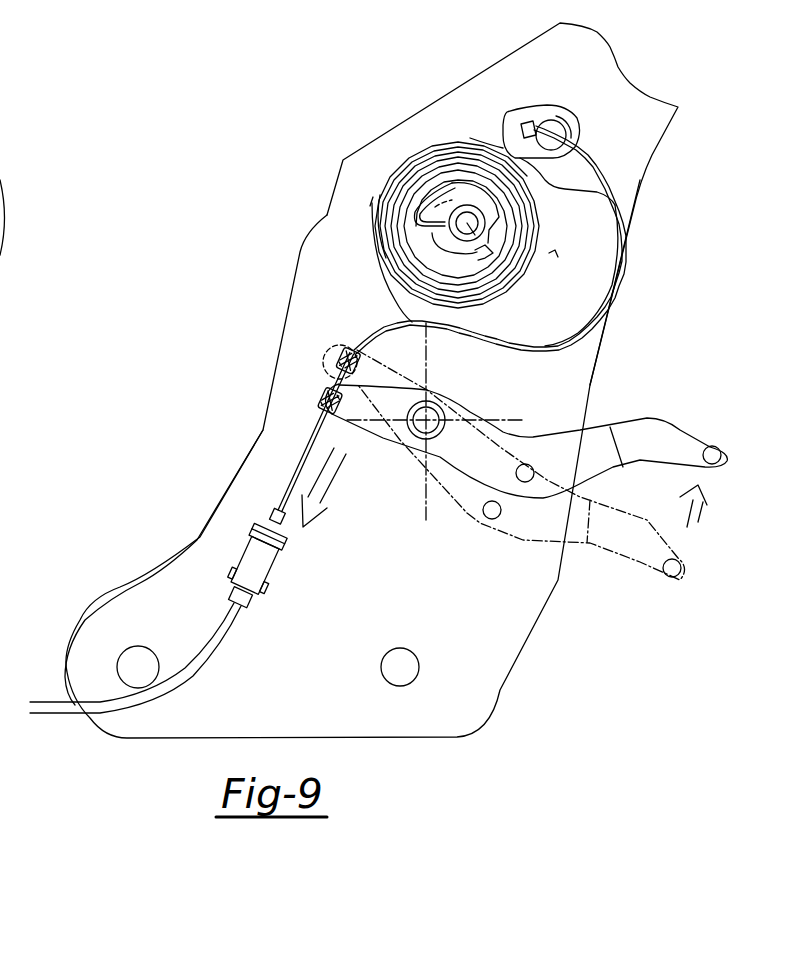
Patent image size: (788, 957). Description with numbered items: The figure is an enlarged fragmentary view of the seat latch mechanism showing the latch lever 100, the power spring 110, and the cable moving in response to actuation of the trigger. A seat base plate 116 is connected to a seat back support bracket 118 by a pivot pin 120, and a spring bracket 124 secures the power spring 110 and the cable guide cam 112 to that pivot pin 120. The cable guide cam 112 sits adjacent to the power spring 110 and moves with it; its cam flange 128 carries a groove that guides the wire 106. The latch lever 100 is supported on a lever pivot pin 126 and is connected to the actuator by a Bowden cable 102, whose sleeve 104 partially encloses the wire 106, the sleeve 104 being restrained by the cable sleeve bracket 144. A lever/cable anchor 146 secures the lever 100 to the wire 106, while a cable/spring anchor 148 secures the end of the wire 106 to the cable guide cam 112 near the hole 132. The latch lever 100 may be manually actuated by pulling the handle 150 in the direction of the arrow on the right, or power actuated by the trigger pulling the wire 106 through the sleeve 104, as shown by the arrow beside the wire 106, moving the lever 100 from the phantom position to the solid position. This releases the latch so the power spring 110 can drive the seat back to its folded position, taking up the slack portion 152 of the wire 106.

The latch lever 100 is at (593, 441).
The Bowden cable 102 is at (195, 650).
The sleeve 104 is at (188, 686).
The wire 106 is at (300, 470).
The power spring 110 is at (400, 181).
The cable guide cam 112 is at (580, 197).
The seat base plate 116 is at (496, 683).
The seat back support bracket 118 is at (653, 128).
The pivot pin 120 is at (467, 228).
The spring bracket 124 is at (477, 252).
The lever pivot pin 126 is at (445, 408).
The cam flange 128 is at (390, 279).
The mounting hole 132 is at (520, 303).
The cable sleeve bracket 144 is at (277, 568).
The lever/cable anchor 146 is at (323, 403).
The cable/spring anchor 148 is at (520, 123).
The handle 150 is at (670, 441).
The slack portion 152 is at (624, 270).